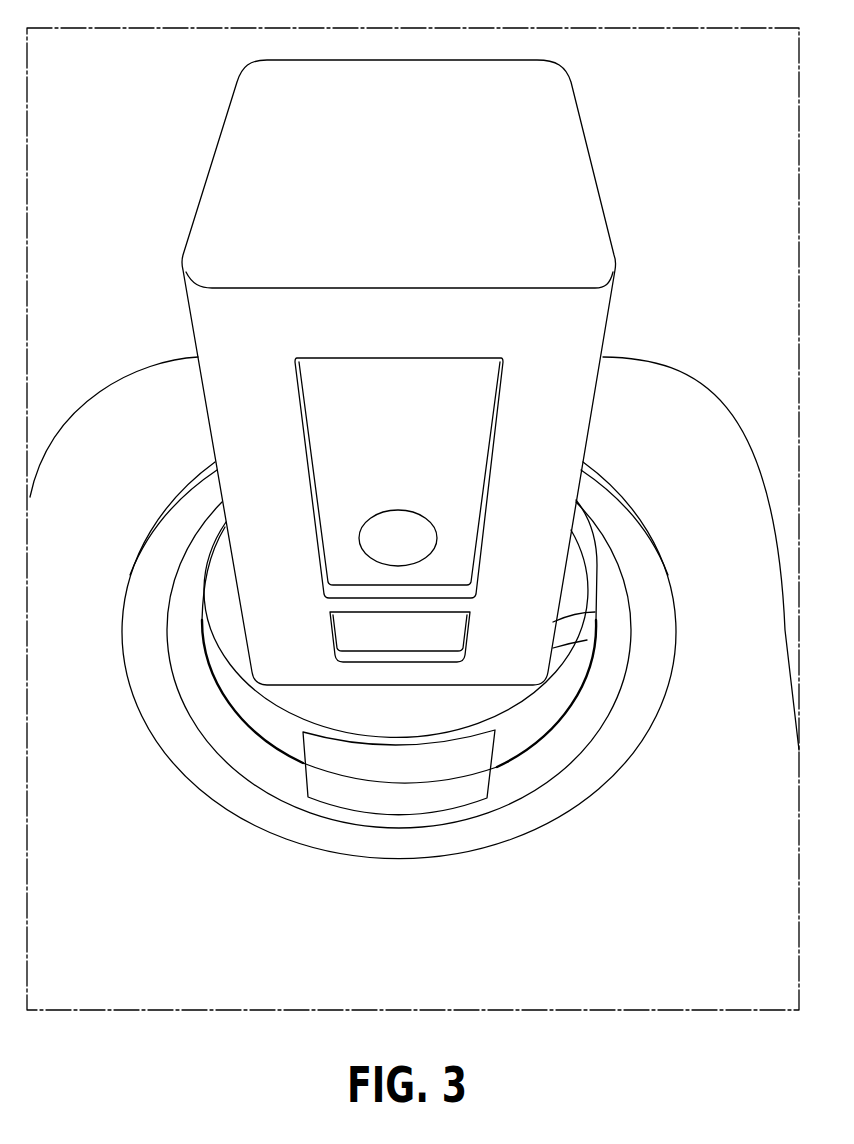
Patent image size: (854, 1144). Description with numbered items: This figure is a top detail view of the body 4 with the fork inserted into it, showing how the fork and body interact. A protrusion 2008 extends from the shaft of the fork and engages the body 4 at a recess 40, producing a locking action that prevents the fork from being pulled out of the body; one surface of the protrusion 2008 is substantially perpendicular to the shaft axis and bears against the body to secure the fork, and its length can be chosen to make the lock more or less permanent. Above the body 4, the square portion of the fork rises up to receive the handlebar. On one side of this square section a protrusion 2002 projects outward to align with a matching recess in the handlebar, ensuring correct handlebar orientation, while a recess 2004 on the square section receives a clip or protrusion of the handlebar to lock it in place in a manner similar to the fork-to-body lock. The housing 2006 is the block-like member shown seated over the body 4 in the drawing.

The body 4 is at (673, 392).
The recess 40 is at (540, 765).
The protrusion 2002 is at (583, 530).
The recess 2004 is at (360, 627).
The housing body 2006 is at (558, 165).
The protrusion 2008 is at (333, 795).